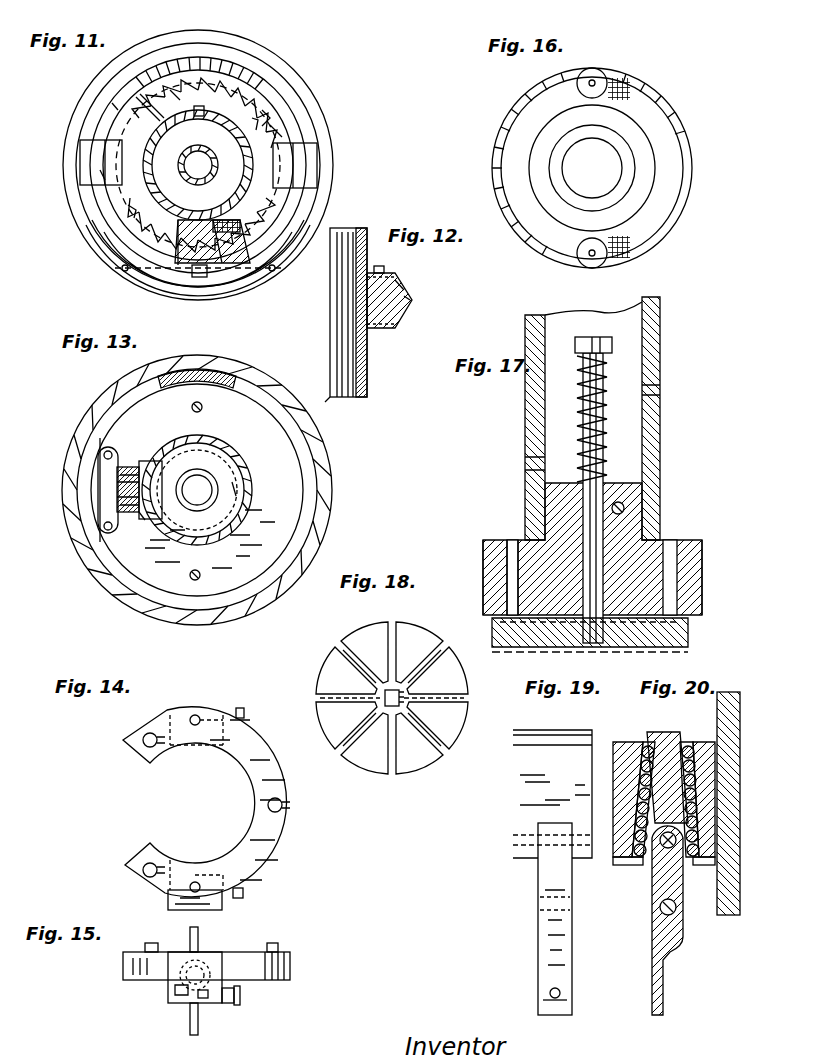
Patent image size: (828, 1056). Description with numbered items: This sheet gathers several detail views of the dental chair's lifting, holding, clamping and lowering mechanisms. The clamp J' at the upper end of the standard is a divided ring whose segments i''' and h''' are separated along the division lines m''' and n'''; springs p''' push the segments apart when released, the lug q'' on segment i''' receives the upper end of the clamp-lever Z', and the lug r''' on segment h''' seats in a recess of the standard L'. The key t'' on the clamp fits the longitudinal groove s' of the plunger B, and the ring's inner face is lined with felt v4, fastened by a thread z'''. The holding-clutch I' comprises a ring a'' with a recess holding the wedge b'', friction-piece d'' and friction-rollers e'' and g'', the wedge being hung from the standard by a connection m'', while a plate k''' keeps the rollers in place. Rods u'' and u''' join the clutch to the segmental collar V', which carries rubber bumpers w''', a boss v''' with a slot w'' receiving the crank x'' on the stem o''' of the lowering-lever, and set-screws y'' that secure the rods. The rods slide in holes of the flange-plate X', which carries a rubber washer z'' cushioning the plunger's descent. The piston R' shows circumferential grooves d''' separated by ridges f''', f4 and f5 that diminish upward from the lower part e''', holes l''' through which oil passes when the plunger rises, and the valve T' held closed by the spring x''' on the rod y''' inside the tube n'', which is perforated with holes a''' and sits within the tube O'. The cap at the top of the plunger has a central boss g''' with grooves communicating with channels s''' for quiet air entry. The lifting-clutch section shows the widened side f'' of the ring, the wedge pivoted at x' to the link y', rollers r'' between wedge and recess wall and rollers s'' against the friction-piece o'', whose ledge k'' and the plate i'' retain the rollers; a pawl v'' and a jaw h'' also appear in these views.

In FIG. 11, the cylindrical shell L' is at (198, 160).
In FIG. 11, the washer z'' is at (221, 165).
In FIG. 16, the washer z'' is at (592, 168).
In FIG. 11, the plunger B is at (198, 165).
In FIG. 12, the plunger B is at (357, 315).
In FIG. 13, the plunger B is at (226, 462).
In FIG. 11, the tube n'' is at (198, 165).
In FIG. 17, the tube n'' is at (605, 418).
In FIG. 11, the longitudinal groove s' is at (191, 120).
In FIG. 13, the longitudinal groove s' is at (253, 490).
In FIG. 11, the felt facing v4 is at (252, 127).
In FIG. 12, the felt facing v4 is at (378, 262).
In FIG. 11, the pawl v'' is at (136, 204).
In FIG. 11, the key or pin t'' is at (198, 137).
In FIG. 11, the thread or cord z''' is at (202, 139).
In FIG. 12, the thread or cord z''' is at (419, 300).
In FIG. 11, the clamp-ring segment h''' is at (293, 159).
In FIG. 12, the clamp-ring segment h''' is at (422, 287).
In FIG. 11, the clamp J' is at (308, 109).
In FIG. 11, the line of division m''' is at (149, 67).
In FIG. 11, the springs p''' is at (231, 152).
In FIG. 12, the springs p''' is at (401, 301).
In FIG. 18, the springs p''' is at (392, 700).
In FIG. 11, the clamp-ring segment i''' is at (116, 194).
In FIG. 11, the clamp-lever Z' is at (73, 161).
In FIG. 13, the clamp-lever Z' is at (201, 356).
In FIG. 11, the projecting lug q'' is at (75, 194).
In FIG. 11, the projecting lug r''' is at (295, 165).
In FIG. 11, the line of division n''' is at (216, 267).
In FIG. 11, the connection m'' is at (195, 293).
In FIG. 13, the holding-clutch I' is at (197, 490).
In FIG. 13, the rod u''' is at (209, 409).
In FIG. 14, the rod u''' is at (199, 730).
In FIG. 16, the rod u''' is at (600, 65).
In FIG. 13, the rod u'' is at (206, 568).
In FIG. 14, the rod u'' is at (196, 876).
In FIG. 15, the rod u'' is at (195, 963).
In FIG. 16, the rod u'' is at (605, 262).
In FIG. 13, the ring a'' is at (212, 482).
In FIG. 13, the tube O' is at (229, 485).
In FIG. 13, the cap k''' is at (78, 490).
In FIG. 18, the cap k''' is at (392, 698).
In FIG. 13, the wedge b'' is at (140, 467).
In FIG. 13, the friction-piece d'' is at (159, 490).
In FIG. 13, the friction-rollers g'' is at (90, 481).
In FIG. 13, the friction-rollers e'' is at (139, 531).
In FIG. 14, the segmental collar V' is at (212, 802).
In FIG. 15, the segmental collar V' is at (221, 966).
In FIG. 14, the set-screws y'' is at (217, 899).
In FIG. 15, the set-screws y'' is at (241, 996).
In FIG. 14, the boss v''' is at (205, 816).
In FIG. 15, the boss v''' is at (163, 992).
In FIG. 14, the rubber bumpers w''' is at (224, 783).
In FIG. 15, the rubber bumpers w''' is at (214, 933).
In FIG. 15, the stem o''' is at (217, 955).
In FIG. 15, the crank x'' is at (175, 1017).
In FIG. 15, the slot w'' is at (215, 1008).
In FIG. 16, the flange-plate X' is at (592, 165).
In FIG. 17, the holes a''' is at (665, 386).
In FIG. 17, the piston R' is at (592, 549).
In FIG. 17, the spring x''' is at (601, 490).
In FIG. 17, the rod y''' is at (576, 419).
In FIG. 17, the holes l''' is at (509, 563).
In FIG. 17, the circumferential grooves d''' is at (471, 575).
In FIG. 17, the ridge f5 is at (702, 545).
In FIG. 17, the ridge f4 is at (702, 559).
In FIG. 17, the ridge f''' is at (715, 574).
In FIG. 17, the lower part of piston e''' is at (716, 597).
In FIG. 17, the valve T' is at (604, 635).
In FIG. 18, the channels s''' is at (407, 698).
In FIG. 18, the boss g''' is at (417, 691).
In FIG. 19, the pivot x' is at (552, 794).
In FIG. 20, the pivot x' is at (667, 777).
In FIG. 19, the connection y' is at (555, 919).
In FIG. 20, the connection y' is at (667, 920).
In FIG. 20, the projecting ledge k'' is at (716, 810).
In FIG. 20, the widened side of ring f'' is at (623, 789).
In FIG. 20, the friction-rollers r'' is at (641, 787).
In FIG. 20, the friction-rollers s'' is at (695, 785).
In FIG. 20, the jaw h'' is at (691, 782).
In FIG. 20, the plate i'' is at (624, 875).
In FIG. 20, the friction-piece o'' is at (704, 873).